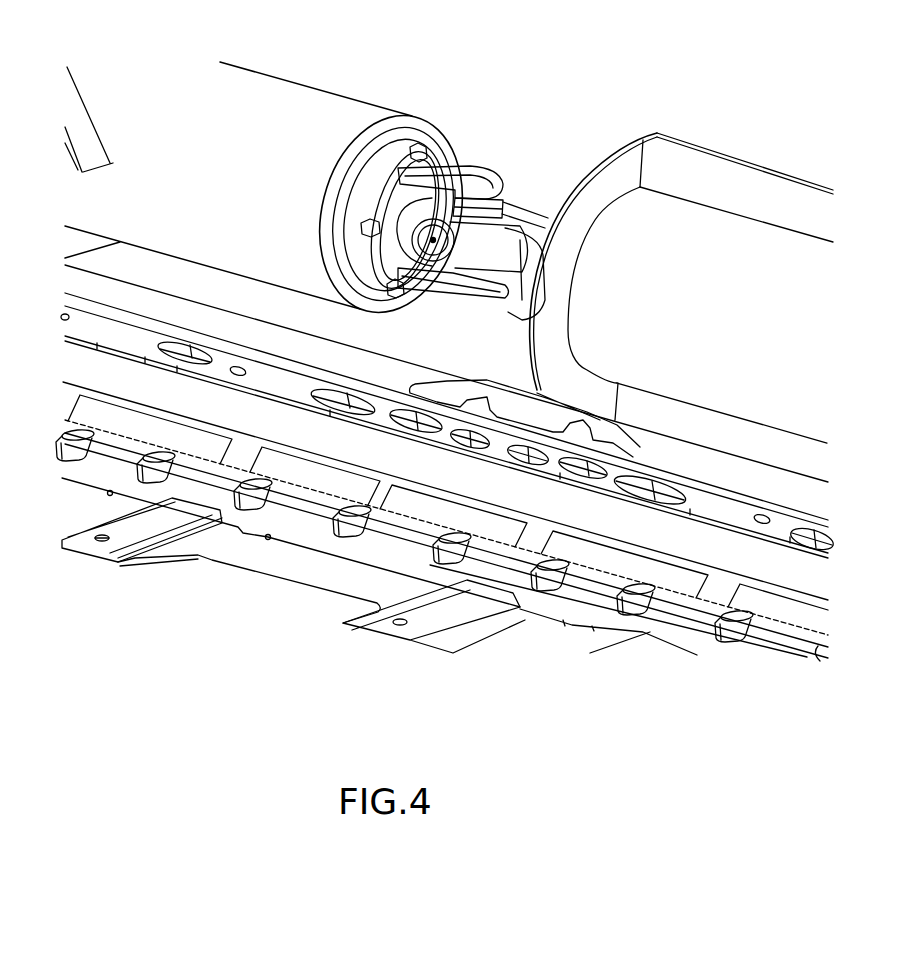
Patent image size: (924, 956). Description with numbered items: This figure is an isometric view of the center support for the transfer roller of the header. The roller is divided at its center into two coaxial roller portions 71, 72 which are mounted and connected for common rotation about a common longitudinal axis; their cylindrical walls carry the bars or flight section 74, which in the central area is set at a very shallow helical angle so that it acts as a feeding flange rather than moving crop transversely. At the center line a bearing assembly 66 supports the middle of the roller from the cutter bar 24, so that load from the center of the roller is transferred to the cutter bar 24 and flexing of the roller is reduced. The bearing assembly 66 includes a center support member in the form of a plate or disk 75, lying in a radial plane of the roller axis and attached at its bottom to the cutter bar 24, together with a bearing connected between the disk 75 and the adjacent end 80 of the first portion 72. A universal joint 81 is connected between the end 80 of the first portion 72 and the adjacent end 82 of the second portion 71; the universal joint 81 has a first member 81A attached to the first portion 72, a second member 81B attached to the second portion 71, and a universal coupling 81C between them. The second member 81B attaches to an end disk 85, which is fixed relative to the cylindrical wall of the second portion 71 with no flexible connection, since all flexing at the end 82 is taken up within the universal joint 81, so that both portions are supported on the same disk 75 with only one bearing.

The cutter bar 24 is at (243, 606).
The bearing assembly 66 is at (537, 199).
The second roller portion 71 is at (298, 104).
The first roller portion 72 is at (699, 224).
The flight section 74 is at (793, 195).
The disk 75 is at (587, 180).
The end of first portion 80 is at (544, 245).
The universal joint 81 is at (458, 309).
The first member 81A is at (550, 238).
The second member 81B is at (437, 163).
The universal coupling 81C is at (527, 163).
The end of second portion 82 is at (408, 113).
The end disk 85 is at (376, 184).